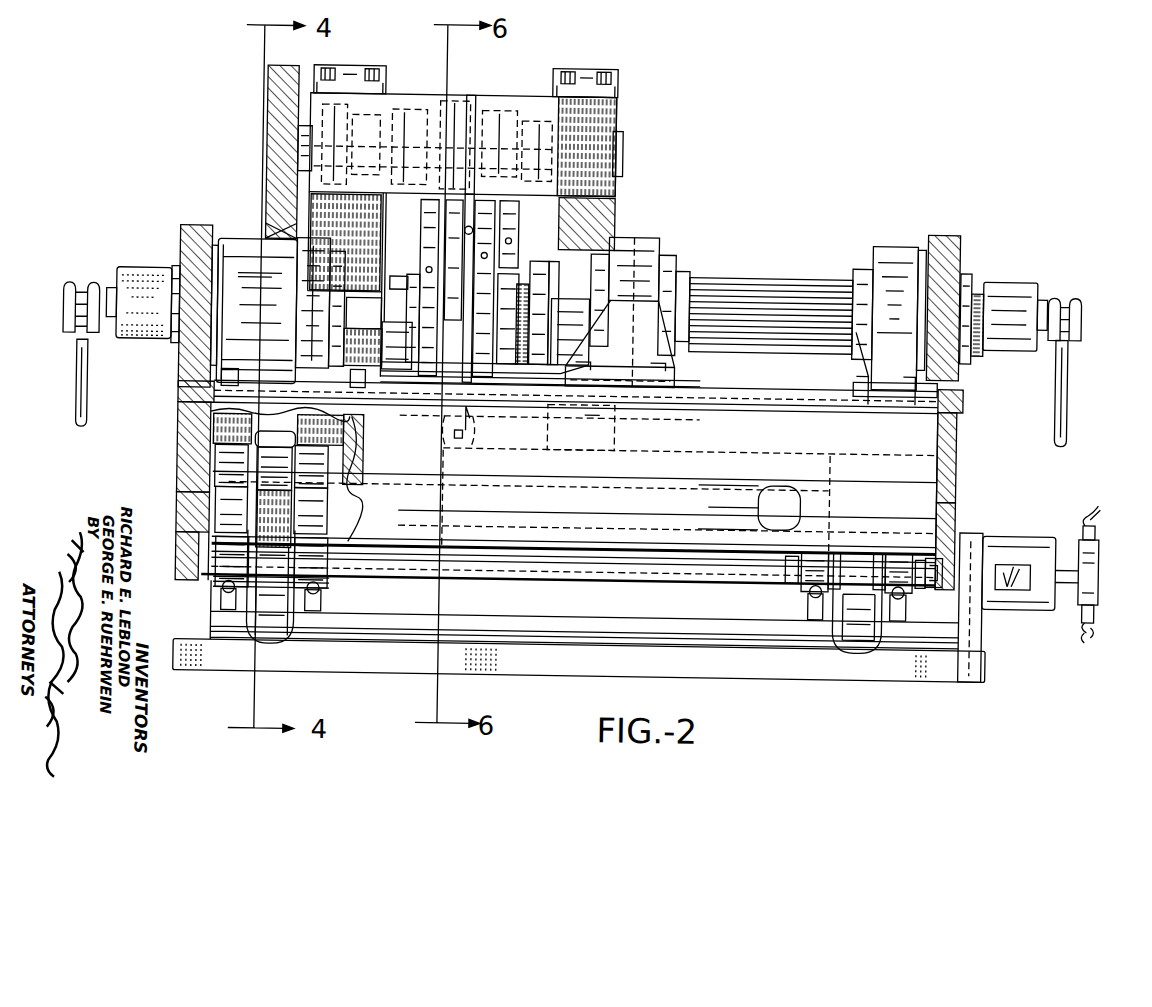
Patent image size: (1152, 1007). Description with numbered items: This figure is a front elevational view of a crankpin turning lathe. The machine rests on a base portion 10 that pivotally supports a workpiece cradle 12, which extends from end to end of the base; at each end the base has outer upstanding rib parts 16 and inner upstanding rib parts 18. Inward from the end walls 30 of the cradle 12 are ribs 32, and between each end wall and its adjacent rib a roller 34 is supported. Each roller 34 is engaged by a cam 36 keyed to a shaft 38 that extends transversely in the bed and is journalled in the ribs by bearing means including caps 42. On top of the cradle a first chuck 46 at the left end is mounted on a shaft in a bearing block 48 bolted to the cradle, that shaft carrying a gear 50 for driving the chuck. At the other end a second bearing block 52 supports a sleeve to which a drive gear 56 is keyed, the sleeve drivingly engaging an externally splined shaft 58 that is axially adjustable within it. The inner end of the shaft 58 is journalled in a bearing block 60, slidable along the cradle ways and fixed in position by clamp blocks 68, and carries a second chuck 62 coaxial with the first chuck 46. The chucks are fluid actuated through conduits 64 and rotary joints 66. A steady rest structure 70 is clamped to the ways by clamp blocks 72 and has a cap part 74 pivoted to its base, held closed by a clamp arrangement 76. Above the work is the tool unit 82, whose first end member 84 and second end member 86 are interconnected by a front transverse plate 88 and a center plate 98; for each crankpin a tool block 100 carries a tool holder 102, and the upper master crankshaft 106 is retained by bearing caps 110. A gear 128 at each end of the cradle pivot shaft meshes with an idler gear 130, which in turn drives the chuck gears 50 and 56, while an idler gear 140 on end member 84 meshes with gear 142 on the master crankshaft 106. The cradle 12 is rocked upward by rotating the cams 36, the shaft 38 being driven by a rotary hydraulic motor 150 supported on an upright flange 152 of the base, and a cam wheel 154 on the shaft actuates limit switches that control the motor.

The base portion 10 is at (371, 676).
The workpiece cradle 12 is at (868, 471).
The outer upstanding rib parts 16 is at (224, 600).
The inner upstanding rib parts 18 is at (334, 592).
The end walls 30 is at (178, 510).
The ribs 32 is at (352, 518).
The roller 34 is at (265, 436).
The cam 36 is at (288, 650).
The shaft 38 is at (640, 580).
The caps 42 is at (220, 565).
The first chuck 46 is at (392, 292).
The bearing block 48 is at (242, 262).
The gear 50 is at (182, 250).
The second bearing block 52 is at (878, 242).
The drive gear 56 is at (962, 244).
The externally splined shaft 58 is at (728, 284).
The bearing block 60 is at (628, 248).
The second chuck 62 is at (552, 298).
The conduits 64 is at (88, 400).
The rotary joints 66 is at (80, 296).
The clamp blocks 68 is at (612, 430).
The steady rest structure 70 is at (470, 430).
The clamp blocks 72 is at (452, 450).
The cap part 74 is at (486, 215).
The clamp arrangement 76 is at (455, 282).
The tool unit 82 is at (401, 76).
The first end member 84 is at (350, 69).
The second end member 86 is at (606, 69).
The transverse plate 88 is at (602, 116).
The center plate 98 is at (470, 97).
The tool block 100 is at (445, 218).
The tool holder 102 is at (422, 292).
The upper master crankshaft 106 is at (622, 146).
The bearing caps 110 is at (312, 72).
The gear 128 is at (180, 540).
The idler gear 130 is at (180, 418).
The idler gear 140 is at (270, 230).
The gear 142 is at (264, 108).
The rotary hydraulic motor 150 is at (1046, 604).
The upright flange 152 is at (986, 660).
The cam wheel 154 is at (1101, 540).